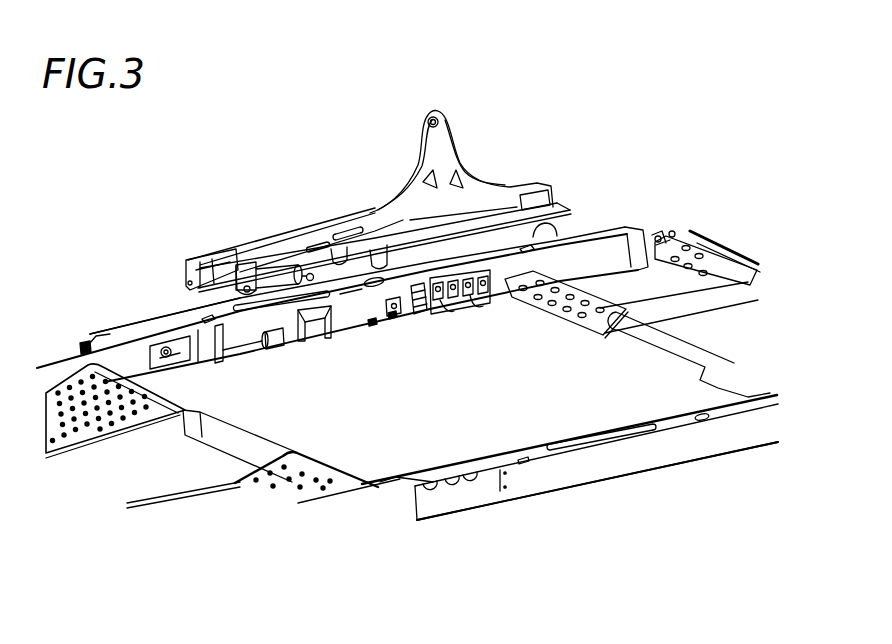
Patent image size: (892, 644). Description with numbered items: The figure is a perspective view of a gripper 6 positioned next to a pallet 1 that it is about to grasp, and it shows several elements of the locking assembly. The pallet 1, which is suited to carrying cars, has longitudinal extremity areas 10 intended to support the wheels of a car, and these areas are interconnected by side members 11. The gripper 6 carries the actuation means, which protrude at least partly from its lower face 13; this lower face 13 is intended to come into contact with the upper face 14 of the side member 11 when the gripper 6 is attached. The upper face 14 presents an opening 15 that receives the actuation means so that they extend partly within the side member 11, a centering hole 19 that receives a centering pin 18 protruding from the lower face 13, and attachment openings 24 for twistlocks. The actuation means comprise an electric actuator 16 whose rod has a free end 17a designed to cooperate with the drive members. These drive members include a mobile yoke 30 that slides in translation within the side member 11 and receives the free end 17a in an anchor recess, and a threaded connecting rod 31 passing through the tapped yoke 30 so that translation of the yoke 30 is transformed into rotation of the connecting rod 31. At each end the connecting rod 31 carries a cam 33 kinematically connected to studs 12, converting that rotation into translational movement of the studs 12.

The pallet 1 is at (673, 487).
The gripper 6 is at (459, 136).
The longitudinal extremity areas 10 is at (107, 450).
The side member 11 is at (624, 226).
The studs 12 is at (468, 284).
The lower face 13 is at (343, 255).
The upper face 14 is at (110, 340).
The opening 15 is at (218, 328).
The electric actuator 16 is at (270, 282).
The free end 17a is at (308, 272).
The centering pin 18 is at (403, 243).
The centering hole 19 is at (350, 296).
The attachment openings 24 is at (210, 316).
The mobile yoke 30 is at (318, 334).
The connecting rod 31 is at (287, 340).
The cam 33 is at (417, 305).